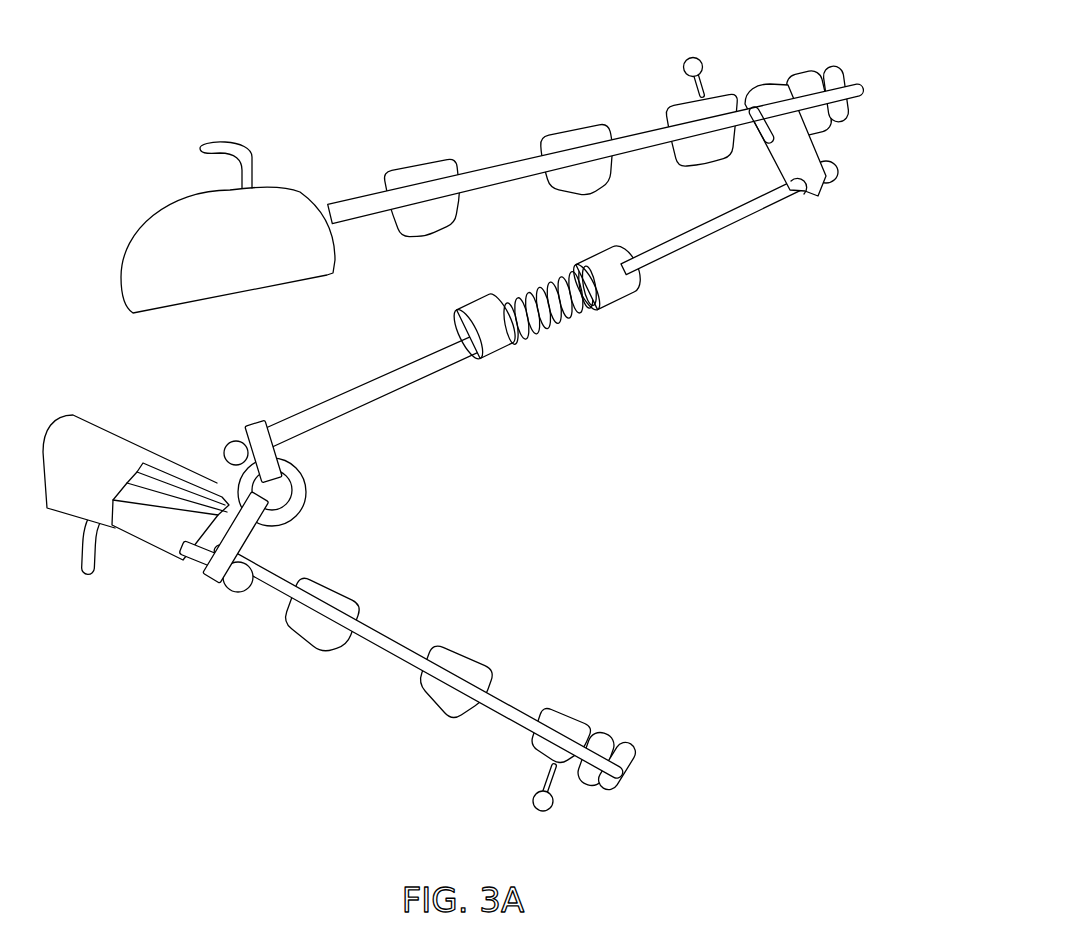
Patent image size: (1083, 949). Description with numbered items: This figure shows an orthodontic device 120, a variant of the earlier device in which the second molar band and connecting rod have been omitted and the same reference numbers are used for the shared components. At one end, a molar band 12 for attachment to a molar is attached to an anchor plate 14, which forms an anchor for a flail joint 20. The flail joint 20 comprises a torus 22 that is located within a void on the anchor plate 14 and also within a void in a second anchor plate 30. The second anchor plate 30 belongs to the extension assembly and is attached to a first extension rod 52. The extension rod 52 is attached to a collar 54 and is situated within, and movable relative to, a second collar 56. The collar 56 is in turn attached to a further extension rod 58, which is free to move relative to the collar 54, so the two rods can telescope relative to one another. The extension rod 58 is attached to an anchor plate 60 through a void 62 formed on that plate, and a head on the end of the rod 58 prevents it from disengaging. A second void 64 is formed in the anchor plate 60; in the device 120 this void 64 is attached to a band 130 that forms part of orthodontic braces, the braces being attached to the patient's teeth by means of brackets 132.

The molar band 12 is at (105, 442).
The anchor plate 14 is at (205, 572).
The flail joint 20 is at (326, 468).
The torus 22 is at (293, 505).
The second anchor plate 30 is at (257, 432).
The first extension rod 52 is at (352, 391).
The collar 54 is at (597, 278).
The second collar 56 is at (485, 316).
The further extension rod 58 is at (687, 243).
The anchor plate 60 is at (807, 152).
The void 62 is at (797, 192).
The second void 64 is at (771, 128).
The orthodontic device 120 is at (516, 454).
The band 130 is at (623, 142).
The brackets 132 is at (420, 170).